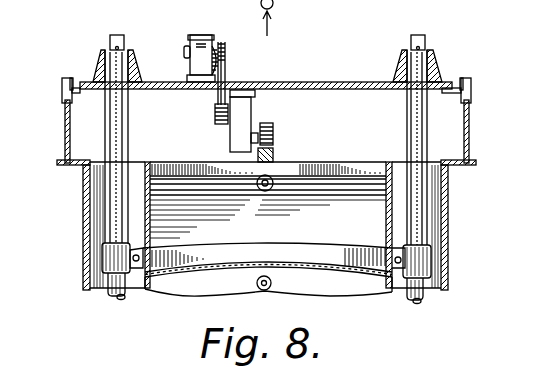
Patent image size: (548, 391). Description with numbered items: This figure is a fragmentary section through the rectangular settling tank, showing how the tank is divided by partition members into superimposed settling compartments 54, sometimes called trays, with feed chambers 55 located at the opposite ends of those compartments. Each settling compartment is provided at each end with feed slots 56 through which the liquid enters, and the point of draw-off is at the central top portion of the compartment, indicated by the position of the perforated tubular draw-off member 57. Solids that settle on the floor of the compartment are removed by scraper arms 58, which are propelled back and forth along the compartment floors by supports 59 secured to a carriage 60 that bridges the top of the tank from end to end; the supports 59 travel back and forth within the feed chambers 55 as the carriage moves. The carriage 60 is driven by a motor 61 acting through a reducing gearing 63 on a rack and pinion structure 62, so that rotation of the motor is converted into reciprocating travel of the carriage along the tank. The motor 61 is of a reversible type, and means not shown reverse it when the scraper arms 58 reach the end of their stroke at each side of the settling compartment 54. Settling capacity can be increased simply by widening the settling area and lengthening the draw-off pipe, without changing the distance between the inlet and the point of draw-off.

The settling compartment 54 is at (331, 218).
The feed chamber 55 is at (100, 207).
The feed slot 56 is at (147, 243).
The perforated tubular draw-off member 57 is at (272, 183).
The scraper arm 58 is at (293, 227).
The support 59 is at (114, 290).
The carriage 60 is at (336, 82).
The motor 61 is at (202, 34).
The rack and pinion structure 62 is at (275, 136).
The reducing gearing 63 is at (233, 139).